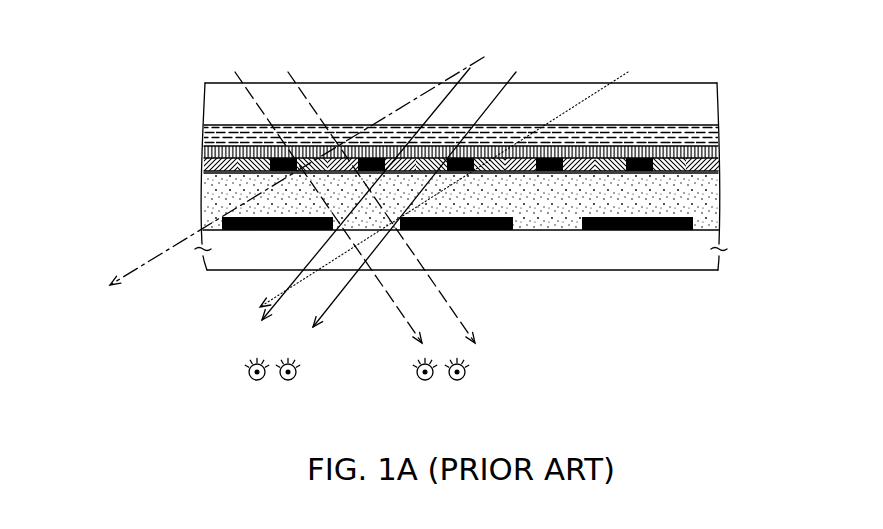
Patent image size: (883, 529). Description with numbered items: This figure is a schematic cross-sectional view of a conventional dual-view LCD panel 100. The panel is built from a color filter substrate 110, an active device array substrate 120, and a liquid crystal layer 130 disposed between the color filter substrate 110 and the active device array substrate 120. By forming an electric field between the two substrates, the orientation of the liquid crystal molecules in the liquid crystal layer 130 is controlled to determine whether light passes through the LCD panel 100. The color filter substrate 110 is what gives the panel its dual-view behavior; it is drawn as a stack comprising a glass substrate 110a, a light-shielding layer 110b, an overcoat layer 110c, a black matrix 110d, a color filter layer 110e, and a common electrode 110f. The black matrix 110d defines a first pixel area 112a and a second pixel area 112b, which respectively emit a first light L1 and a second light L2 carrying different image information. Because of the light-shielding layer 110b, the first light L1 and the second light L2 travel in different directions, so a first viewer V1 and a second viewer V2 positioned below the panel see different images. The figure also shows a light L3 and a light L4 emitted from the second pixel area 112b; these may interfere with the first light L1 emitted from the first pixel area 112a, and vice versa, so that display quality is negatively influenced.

The dual-view LCD panel 100 is at (833, 87).
The color filter substrate 110 is at (782, 135).
The glass substrate 110a is at (705, 242).
The light-shielding layer 110b is at (692, 222).
The overcoat layer 110c is at (690, 196).
The black matrix 110d is at (647, 171).
The color filter layer 110e is at (720, 169).
The common electrode 110f is at (718, 148).
The first pixel area 112a is at (594, 160).
The second pixel area 112b is at (512, 160).
The active device array substrate 120 is at (712, 98).
The liquid crystal layer 130 is at (712, 127).
The first light L1 is at (338, 298).
The second light L2 is at (445, 296).
The light L3 is at (278, 288).
The light L4 is at (167, 248).
The first viewer V1 is at (288, 371).
The second viewer V2 is at (457, 371).